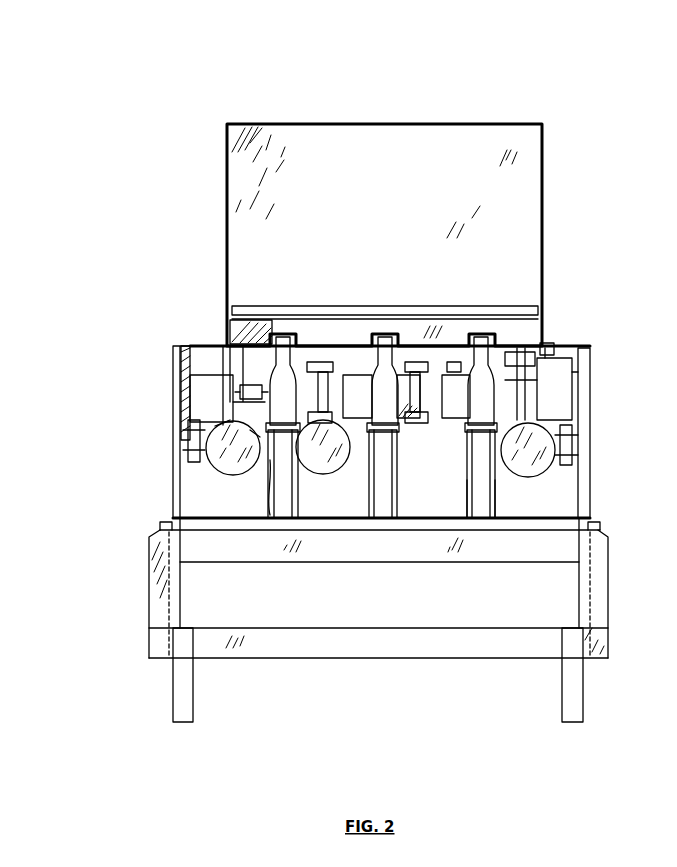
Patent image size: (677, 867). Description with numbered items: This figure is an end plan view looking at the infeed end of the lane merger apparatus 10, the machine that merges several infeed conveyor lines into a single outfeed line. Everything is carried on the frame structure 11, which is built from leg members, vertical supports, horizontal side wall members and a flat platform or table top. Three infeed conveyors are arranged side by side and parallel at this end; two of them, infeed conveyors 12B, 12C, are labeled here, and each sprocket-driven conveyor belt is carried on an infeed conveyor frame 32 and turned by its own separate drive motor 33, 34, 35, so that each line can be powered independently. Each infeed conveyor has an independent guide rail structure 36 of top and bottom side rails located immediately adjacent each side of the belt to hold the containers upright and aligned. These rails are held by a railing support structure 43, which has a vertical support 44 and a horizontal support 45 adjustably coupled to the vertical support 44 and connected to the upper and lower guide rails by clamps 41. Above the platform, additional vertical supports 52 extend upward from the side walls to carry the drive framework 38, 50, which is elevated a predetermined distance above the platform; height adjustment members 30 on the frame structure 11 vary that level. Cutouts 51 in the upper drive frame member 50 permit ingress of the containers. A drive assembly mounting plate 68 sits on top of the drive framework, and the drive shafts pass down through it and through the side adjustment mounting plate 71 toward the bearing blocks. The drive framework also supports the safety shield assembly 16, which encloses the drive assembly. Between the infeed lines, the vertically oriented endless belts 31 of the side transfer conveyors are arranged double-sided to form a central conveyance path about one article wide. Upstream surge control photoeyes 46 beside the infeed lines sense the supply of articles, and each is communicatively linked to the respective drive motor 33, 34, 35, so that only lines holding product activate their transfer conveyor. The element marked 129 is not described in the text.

The lane merger apparatus 10 is at (140, 66).
The frame structure 11 is at (118, 583).
The infeed conveyor 12B is at (397, 446).
The infeed conveyor 12C is at (465, 470).
The safety shield assembly 16 is at (530, 192).
The height adjustment member 30 is at (186, 456).
The endless belt 31 is at (382, 396).
The infeed conveyor frame 32 is at (467, 495).
The drive motor 33 is at (236, 479).
The drive motor 34 is at (333, 474).
The drive motor 35 is at (532, 477).
The guide rail structure 36 is at (443, 386).
The drive framework 38 is at (574, 382).
The clamp 41 is at (259, 384).
The railing support structure 43 is at (587, 308).
The vertical support 44 is at (548, 344).
The horizontal support 45 is at (236, 400).
The photoeye 46 is at (406, 362).
The upper drive frame member 50 is at (462, 306).
The cutout 51 is at (298, 336).
The vertical support 52 is at (186, 346).
The drive assembly mounting plate 68 is at (265, 306).
The side adjustment mounting plate 71 is at (360, 306).
The pump tube 129 is at (296, 470).